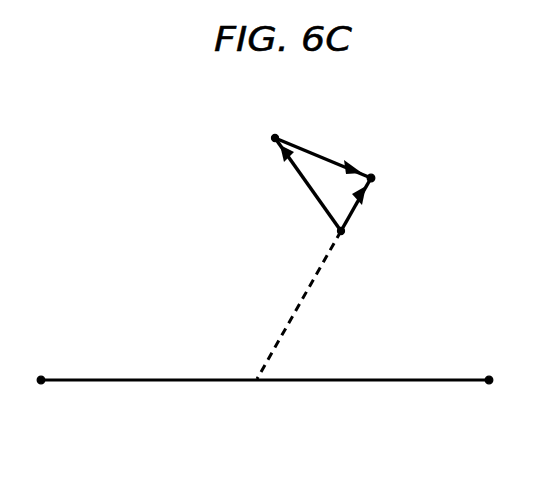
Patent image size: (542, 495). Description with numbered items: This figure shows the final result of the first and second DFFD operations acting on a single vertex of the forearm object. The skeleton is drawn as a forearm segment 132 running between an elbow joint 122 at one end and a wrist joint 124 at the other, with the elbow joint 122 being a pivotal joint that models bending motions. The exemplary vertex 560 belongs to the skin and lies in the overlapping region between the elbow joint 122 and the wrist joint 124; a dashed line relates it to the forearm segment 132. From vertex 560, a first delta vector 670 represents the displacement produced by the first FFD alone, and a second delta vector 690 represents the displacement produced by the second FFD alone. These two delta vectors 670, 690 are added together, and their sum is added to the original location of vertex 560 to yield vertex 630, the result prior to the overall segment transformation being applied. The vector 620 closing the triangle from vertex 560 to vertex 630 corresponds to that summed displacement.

The elbow joint 122 is at (41, 376).
The wrist joint 124 is at (489, 376).
The forearm segment 132 is at (145, 382).
The vertex 560 is at (338, 232).
The first vector 620 is at (354, 206).
The vertex 630 is at (374, 178).
The first delta vector 670 is at (291, 165).
The second delta vector 690 is at (337, 160).